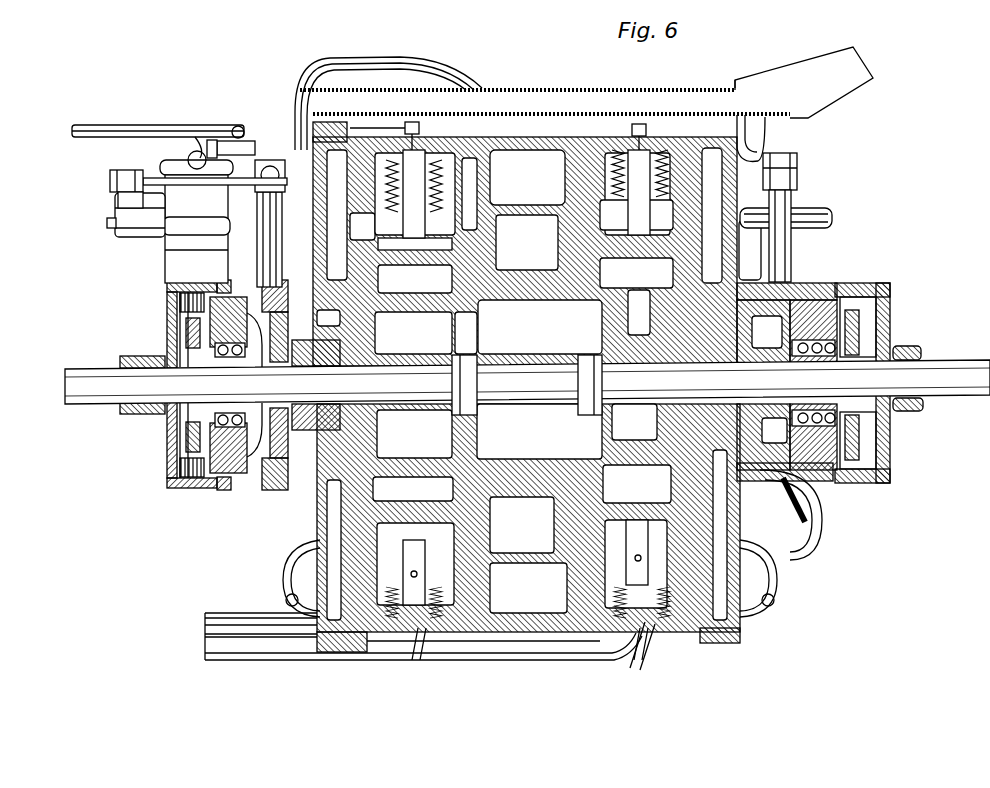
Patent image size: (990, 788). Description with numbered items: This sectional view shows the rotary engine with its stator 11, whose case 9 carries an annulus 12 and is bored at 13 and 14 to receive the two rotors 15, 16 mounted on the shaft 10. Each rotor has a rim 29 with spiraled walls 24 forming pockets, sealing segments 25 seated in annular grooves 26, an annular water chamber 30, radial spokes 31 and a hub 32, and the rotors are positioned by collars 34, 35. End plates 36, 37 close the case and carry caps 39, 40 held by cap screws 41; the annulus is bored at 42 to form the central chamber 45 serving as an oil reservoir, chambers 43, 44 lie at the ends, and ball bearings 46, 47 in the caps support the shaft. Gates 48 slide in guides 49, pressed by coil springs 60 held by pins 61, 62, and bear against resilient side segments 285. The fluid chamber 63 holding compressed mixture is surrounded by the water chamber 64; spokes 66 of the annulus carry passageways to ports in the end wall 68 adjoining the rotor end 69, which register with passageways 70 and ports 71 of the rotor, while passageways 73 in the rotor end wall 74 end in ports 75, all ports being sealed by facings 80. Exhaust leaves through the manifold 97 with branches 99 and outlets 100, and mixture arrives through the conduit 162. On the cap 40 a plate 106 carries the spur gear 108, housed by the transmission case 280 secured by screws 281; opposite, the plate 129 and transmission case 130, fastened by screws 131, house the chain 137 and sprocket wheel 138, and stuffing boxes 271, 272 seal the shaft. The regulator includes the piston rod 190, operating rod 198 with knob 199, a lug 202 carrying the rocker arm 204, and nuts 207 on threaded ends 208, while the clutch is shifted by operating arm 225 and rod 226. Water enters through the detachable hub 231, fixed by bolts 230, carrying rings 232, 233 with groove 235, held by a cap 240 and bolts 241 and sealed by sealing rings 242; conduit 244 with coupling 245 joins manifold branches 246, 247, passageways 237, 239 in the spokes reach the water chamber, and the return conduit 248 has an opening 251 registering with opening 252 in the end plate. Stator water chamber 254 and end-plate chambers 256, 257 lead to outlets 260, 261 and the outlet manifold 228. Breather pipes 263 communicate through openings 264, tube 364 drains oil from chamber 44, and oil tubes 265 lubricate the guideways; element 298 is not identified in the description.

The case 9 is at (494, 654).
The shaft 10 is at (80, 400).
The stator 11 is at (525, 642).
The annulus 12 is at (522, 470).
The bore 13 is at (500, 190).
The bore 14 is at (552, 190).
The rotor 15 is at (486, 345).
The rotor 16 is at (588, 320).
The spiraled walls 24 is at (410, 298).
The sealing segments 25 is at (358, 230).
The annular grooves 26 is at (330, 255).
The rim portion 29 is at (432, 345).
The water chamber 30 is at (620, 245).
The radial spokes 31 is at (440, 360).
The hub 32 is at (394, 412).
The collar 34 is at (470, 404).
The collar 35 is at (580, 400).
The end plate 36 is at (320, 520).
The end plate 37 is at (790, 532).
The cap 39 is at (290, 546).
The cap 40 is at (850, 562).
The cap screws 41 is at (264, 480).
The internal bore 42 is at (532, 355).
The chamber 43 is at (250, 474).
The chamber 44 is at (832, 482).
The central chamber 45 is at (517, 540).
The ball bearing 46 is at (218, 350).
The ball bearing 47 is at (860, 335).
The gate 48 is at (470, 160).
The guides 49 is at (448, 140).
The coil springs 60 is at (336, 176).
The pin 61 is at (404, 124).
The pin 62 is at (412, 188).
The fluid chamber 63 is at (530, 140).
The annular water chamber 64 is at (527, 210).
The spokes 66 is at (504, 250).
The end wall 68 is at (522, 272).
The end 69 is at (436, 298).
The passageways 70 is at (498, 245).
The ports 71 is at (550, 238).
The passageways 73 is at (386, 298).
The end wall 74 is at (388, 345).
The ports 75 is at (306, 281).
The facings 80 is at (480, 480).
The exhaust manifold 97 is at (455, 662).
The branches 99 is at (622, 648).
The outlets 100 is at (300, 662).
The plate 106 is at (860, 310).
The spur gear 108 is at (862, 440).
The plate 129 is at (180, 284).
The transmission case 130 is at (170, 296).
The screws 131 is at (170, 482).
The chain 137 is at (192, 305).
The sprocket wheel 138 is at (192, 332).
The conduit 162 is at (345, 57).
The piston rod 190 is at (190, 185).
The operating rod 198 is at (200, 140).
The operating knob 199 is at (188, 158).
The lug 202 is at (125, 236).
The rocker arm 204 is at (118, 205).
The nuts 207 is at (110, 180).
The threaded end 208 is at (107, 224).
The operating arm 225 is at (195, 132).
The operating rod 226 is at (100, 128).
The water outlet manifold 228 is at (770, 82).
The bolts 230 is at (676, 272).
The detachable hub 231 is at (740, 396).
The ring 232 is at (708, 212).
The ring 233 is at (746, 284).
The annular groove 235 is at (752, 332).
The passageway 237 is at (582, 344).
The passageway 239 is at (556, 470).
The cap 240 is at (778, 346).
The bolts 241 is at (815, 360).
The sealing rings 242 is at (626, 400).
The conduit 244 is at (290, 560).
The coupling 245 is at (282, 586).
The branch 246 is at (286, 607).
The branch 247 is at (770, 600).
The conduit 248 is at (760, 615).
The opening 251 is at (322, 645).
The opening 252 is at (338, 652).
The water chamber 254 is at (642, 328).
The water chambers 256 is at (668, 396).
The chambers 257 is at (302, 125).
The water outlet 260 is at (770, 145).
The water outlet 261 is at (292, 130).
The breather pipes 263 is at (792, 200).
The openings 264 is at (832, 288).
The oil tubes 265 is at (402, 88).
The stuffing box 271 is at (920, 348).
The stuffing box 272 is at (168, 420).
The transmission case 280 is at (878, 290).
The screws 281 is at (920, 412).
The resilient side segments 285 is at (440, 244).
The sleeve 298 is at (766, 396).
The tube 364 is at (808, 512).